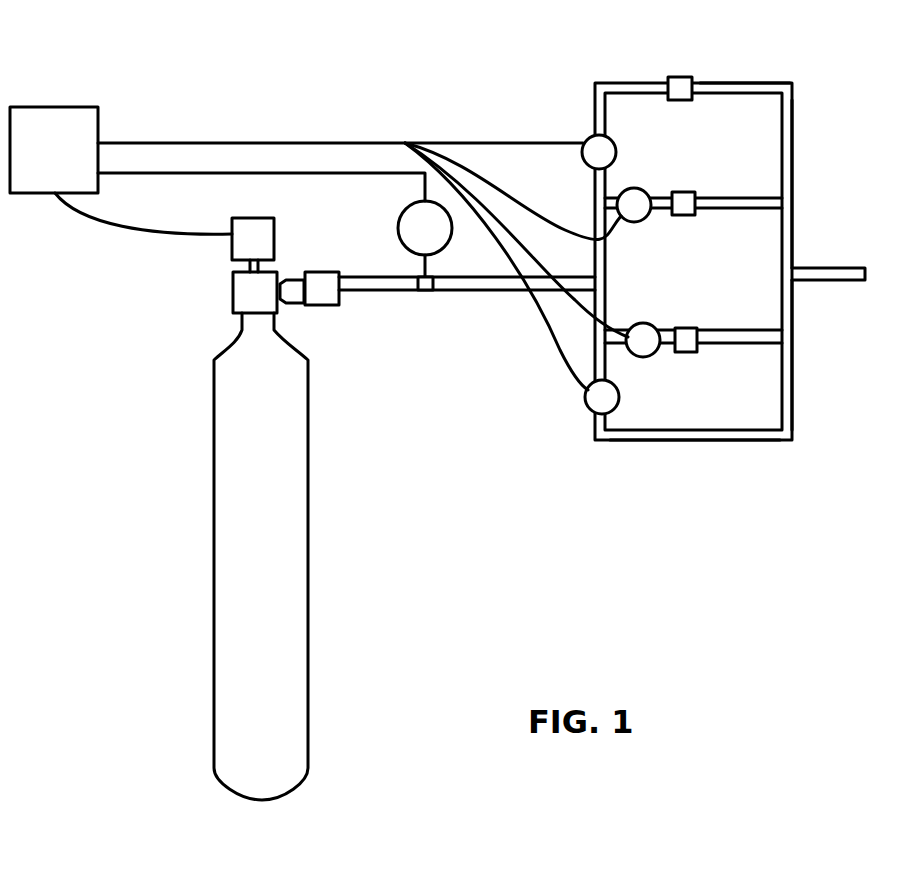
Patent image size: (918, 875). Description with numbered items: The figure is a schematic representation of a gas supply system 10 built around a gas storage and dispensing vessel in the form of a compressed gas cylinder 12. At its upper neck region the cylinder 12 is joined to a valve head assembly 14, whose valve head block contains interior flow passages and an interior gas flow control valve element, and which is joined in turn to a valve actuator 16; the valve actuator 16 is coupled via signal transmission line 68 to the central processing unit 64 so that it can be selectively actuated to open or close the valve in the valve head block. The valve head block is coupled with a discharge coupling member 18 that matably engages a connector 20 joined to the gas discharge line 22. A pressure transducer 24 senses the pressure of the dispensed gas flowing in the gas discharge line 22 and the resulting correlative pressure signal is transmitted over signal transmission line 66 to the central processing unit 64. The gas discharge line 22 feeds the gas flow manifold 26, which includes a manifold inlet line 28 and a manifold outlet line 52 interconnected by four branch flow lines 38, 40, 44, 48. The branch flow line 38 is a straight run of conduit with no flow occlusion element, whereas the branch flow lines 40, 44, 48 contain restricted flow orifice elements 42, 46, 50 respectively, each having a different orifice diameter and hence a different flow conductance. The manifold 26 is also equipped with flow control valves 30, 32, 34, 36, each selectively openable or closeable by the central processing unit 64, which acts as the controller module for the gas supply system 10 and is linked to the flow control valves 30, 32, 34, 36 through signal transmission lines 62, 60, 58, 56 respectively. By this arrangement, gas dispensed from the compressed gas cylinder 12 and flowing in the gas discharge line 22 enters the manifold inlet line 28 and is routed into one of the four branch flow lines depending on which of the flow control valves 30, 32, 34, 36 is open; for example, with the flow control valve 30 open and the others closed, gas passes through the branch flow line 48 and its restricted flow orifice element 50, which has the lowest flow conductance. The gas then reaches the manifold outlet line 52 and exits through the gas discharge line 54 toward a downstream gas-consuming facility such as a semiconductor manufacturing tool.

The gas supply system 10 is at (138, 655).
The compressed gas cylinder 12 is at (283, 640).
The valve head assembly 14 is at (226, 302).
The valve actuator 16 is at (260, 247).
The discharge coupling member 18 is at (292, 300).
The connector 20 is at (323, 305).
The gas discharge line 22 is at (395, 292).
The pressure transducer 24 is at (397, 229).
The gas flow manifold 26 is at (612, 470).
The manifold inlet line 28 is at (594, 110).
The flow control valve 30 is at (650, 130).
The flow control valve 32 is at (645, 220).
The flow control valve 34 is at (658, 325).
The flow control valve 36 is at (619, 392).
The branch flow line 38 is at (680, 441).
The branch flow line 40 is at (735, 345).
The restricted flow orifice element 42 is at (698, 328).
The branch flow line 44 is at (713, 209).
The restricted flow orifice element 46 is at (690, 192).
The branch flow line 48 is at (728, 83).
The restricted flow orifice element 50 is at (677, 77).
The manifold outlet line 52 is at (793, 162).
The gas discharge line 54 is at (828, 284).
The signal transmission line 56 is at (560, 357).
The signal transmission line 58 is at (573, 296).
The signal transmission line 60 is at (553, 180).
The signal transmission line 62 is at (510, 142).
The central processing unit 64 is at (80, 107).
The signal transmission line 66 is at (232, 172).
The signal transmission line 68 is at (122, 227).